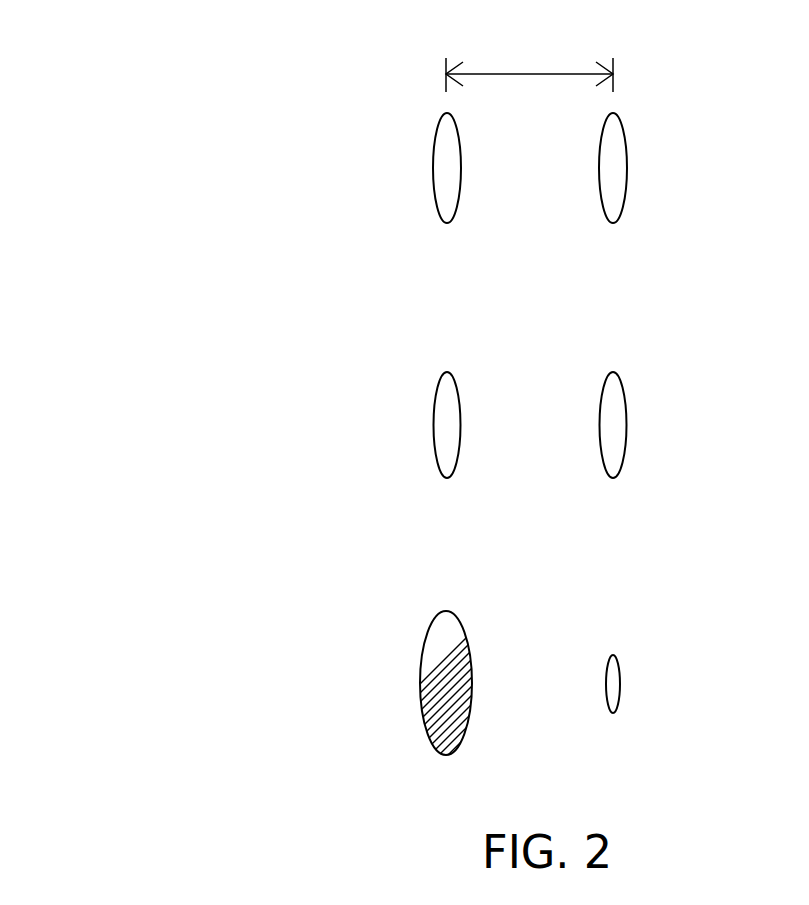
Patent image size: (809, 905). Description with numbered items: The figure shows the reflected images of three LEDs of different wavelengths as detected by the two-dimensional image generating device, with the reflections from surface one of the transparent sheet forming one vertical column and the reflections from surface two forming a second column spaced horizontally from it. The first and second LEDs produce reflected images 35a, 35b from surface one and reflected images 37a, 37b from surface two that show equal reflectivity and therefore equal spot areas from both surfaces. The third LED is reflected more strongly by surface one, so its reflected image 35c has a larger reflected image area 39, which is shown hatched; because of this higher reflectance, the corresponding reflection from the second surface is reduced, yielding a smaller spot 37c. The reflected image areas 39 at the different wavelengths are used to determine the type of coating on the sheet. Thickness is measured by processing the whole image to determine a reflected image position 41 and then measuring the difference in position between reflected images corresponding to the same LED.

The reflected image position 41 is at (530, 73).
The reflected image of first LED from surface one 35a is at (427, 163).
The reflected image of second LED from surface one 35b is at (425, 422).
The reflected image of third LED from surface one 35c is at (412, 687).
The reflected image of first LED from surface two 37a is at (633, 163).
The reflected image of second LED from surface two 37b is at (633, 422).
The reflected image of third LED from surface two 37c is at (645, 686).
The reflected image area 39 is at (447, 682).